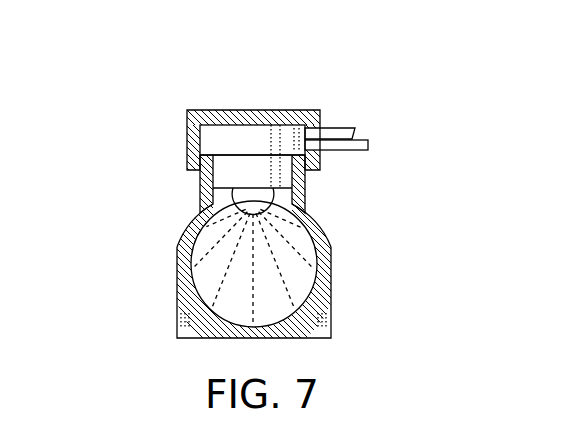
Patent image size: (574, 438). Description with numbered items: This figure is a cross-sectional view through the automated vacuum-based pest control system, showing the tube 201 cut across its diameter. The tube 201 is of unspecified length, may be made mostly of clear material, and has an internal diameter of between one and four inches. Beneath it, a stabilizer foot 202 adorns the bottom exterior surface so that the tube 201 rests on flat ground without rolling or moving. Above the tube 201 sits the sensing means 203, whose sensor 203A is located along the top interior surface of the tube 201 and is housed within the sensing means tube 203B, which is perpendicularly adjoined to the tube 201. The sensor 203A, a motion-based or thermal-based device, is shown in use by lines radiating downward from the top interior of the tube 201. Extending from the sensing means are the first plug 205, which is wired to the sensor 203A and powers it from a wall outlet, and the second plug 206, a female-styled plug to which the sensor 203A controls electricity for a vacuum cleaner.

The tube 201 is at (178, 244).
The stabilizer foot 202 is at (177, 306).
The sensing means 203 is at (150, 108).
The sensor 203A is at (258, 192).
The sensing means tube 203B is at (200, 187).
The first plug 205 is at (331, 128).
The second plug 206 is at (360, 140).